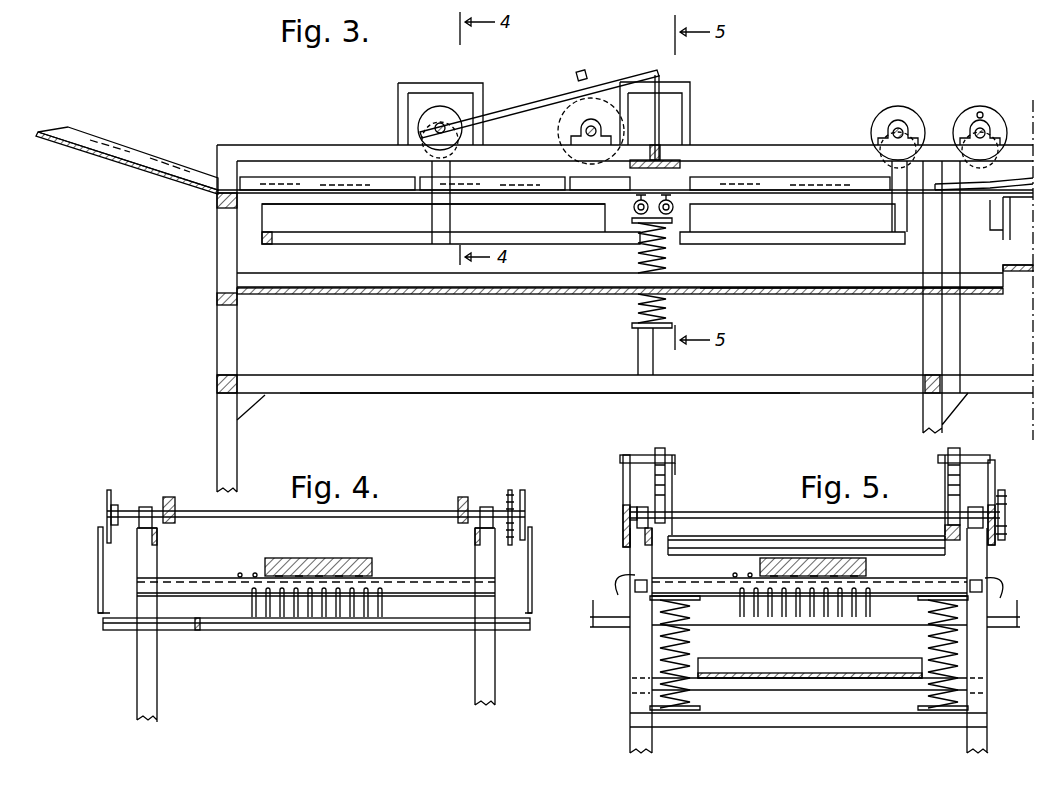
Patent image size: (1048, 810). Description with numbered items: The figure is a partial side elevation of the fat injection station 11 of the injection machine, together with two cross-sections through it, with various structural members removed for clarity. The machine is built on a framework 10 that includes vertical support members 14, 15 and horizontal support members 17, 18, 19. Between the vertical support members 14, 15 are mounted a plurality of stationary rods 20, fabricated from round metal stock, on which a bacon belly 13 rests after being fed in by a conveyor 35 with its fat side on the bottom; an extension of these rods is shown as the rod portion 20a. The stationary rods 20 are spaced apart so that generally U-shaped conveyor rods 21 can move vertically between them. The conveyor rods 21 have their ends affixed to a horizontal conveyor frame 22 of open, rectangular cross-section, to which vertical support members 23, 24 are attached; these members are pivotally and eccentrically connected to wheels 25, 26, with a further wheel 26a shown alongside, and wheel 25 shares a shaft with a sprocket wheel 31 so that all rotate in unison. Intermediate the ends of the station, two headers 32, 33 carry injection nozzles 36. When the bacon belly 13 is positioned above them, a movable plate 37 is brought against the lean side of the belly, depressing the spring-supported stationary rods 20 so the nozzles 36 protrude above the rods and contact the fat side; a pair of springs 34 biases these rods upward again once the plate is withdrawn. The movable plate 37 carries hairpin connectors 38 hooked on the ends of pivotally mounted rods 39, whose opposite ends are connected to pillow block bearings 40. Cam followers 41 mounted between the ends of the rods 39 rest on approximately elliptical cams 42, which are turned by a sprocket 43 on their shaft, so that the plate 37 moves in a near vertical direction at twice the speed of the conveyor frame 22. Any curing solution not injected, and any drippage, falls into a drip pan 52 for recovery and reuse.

In FIG. 3, the framework 10 is at (217, 318).
In FIG. 3, the fat injection station 11 is at (430, 375).
In FIG. 3, the bacon belly 13 is at (130, 150).
In FIG. 4, the bacon belly 13 is at (340, 558).
In FIG. 5, the bacon belly 13 is at (762, 565).
In FIG. 3, the vertical support member 14 is at (217, 375).
In FIG. 4, the vertical support member 14 is at (137, 665).
In FIG. 3, the vertical support member 15 is at (923, 335).
In FIG. 3, the horizontal support member 17 is at (515, 393).
In FIG. 3, the horizontal support member 18 is at (493, 290).
In FIG. 3, the horizontal support member 19 is at (1015, 285).
In FIG. 3, the stationary rods 20 is at (240, 205).
In FIG. 4, the stationary rods 20 is at (390, 578).
In FIG. 5, the stationary rods 20 is at (880, 578).
In FIG. 3, the tray extension 20a is at (1020, 200).
In FIG. 3, the conveyor rods 21 is at (318, 204).
In FIG. 4, the conveyor rods 21 is at (385, 605).
In FIG. 5, the conveyor rods 21 is at (872, 605).
In FIG. 3, the conveyor frame 22 is at (285, 240).
In FIG. 4, the conveyor frame 22 is at (375, 630).
In FIG. 5, the conveyor frame 22 is at (605, 627).
In FIG. 3, the vertical support member 23 is at (432, 222).
In FIG. 4, the vertical support member 23 is at (98, 578).
In FIG. 3, the vertical support member 24 is at (905, 235).
In FIG. 3, the wheel 25 is at (425, 118).
In FIG. 4, the wheel 25 is at (107, 495).
In FIG. 3, the wheel 26 is at (900, 115).
In FIG. 3, the pulley 26a is at (990, 118).
In FIG. 4, the sprocket wheel 31 is at (508, 495).
In FIG. 3, the header 32 is at (635, 215).
In FIG. 3, the header 33 is at (672, 215).
In FIG. 5, the header 33 is at (660, 570).
In FIG. 3, the springs 34 is at (666, 248).
In FIG. 5, the springs 34 is at (965, 660).
In FIG. 3, the conveyor 35 is at (160, 178).
In FIG. 3, the injection nozzles 36 is at (612, 186).
In FIG. 3, the movable plate 37 is at (680, 160).
In FIG. 5, the movable plate 37 is at (700, 540).
In FIG. 3, the hairpin connectors 38 is at (659, 118).
In FIG. 5, the hairpin connectors 38 is at (665, 492).
In FIG. 3, the pivotally mounted rods 39 is at (520, 105).
In FIG. 5, the pivotally mounted rods 39 is at (640, 455).
In FIG. 3, the pillow block bearings 40 is at (448, 128).
In FIG. 3, the cam followers 41 is at (587, 76).
In FIG. 3, the cams 42 is at (558, 126).
In FIG. 5, the cams 42 is at (623, 485).
In FIG. 5, the sprocket 43 is at (1007, 500).
In FIG. 3, the drip pan 52 is at (815, 290).
In FIG. 5, the drip pan 52 is at (835, 660).